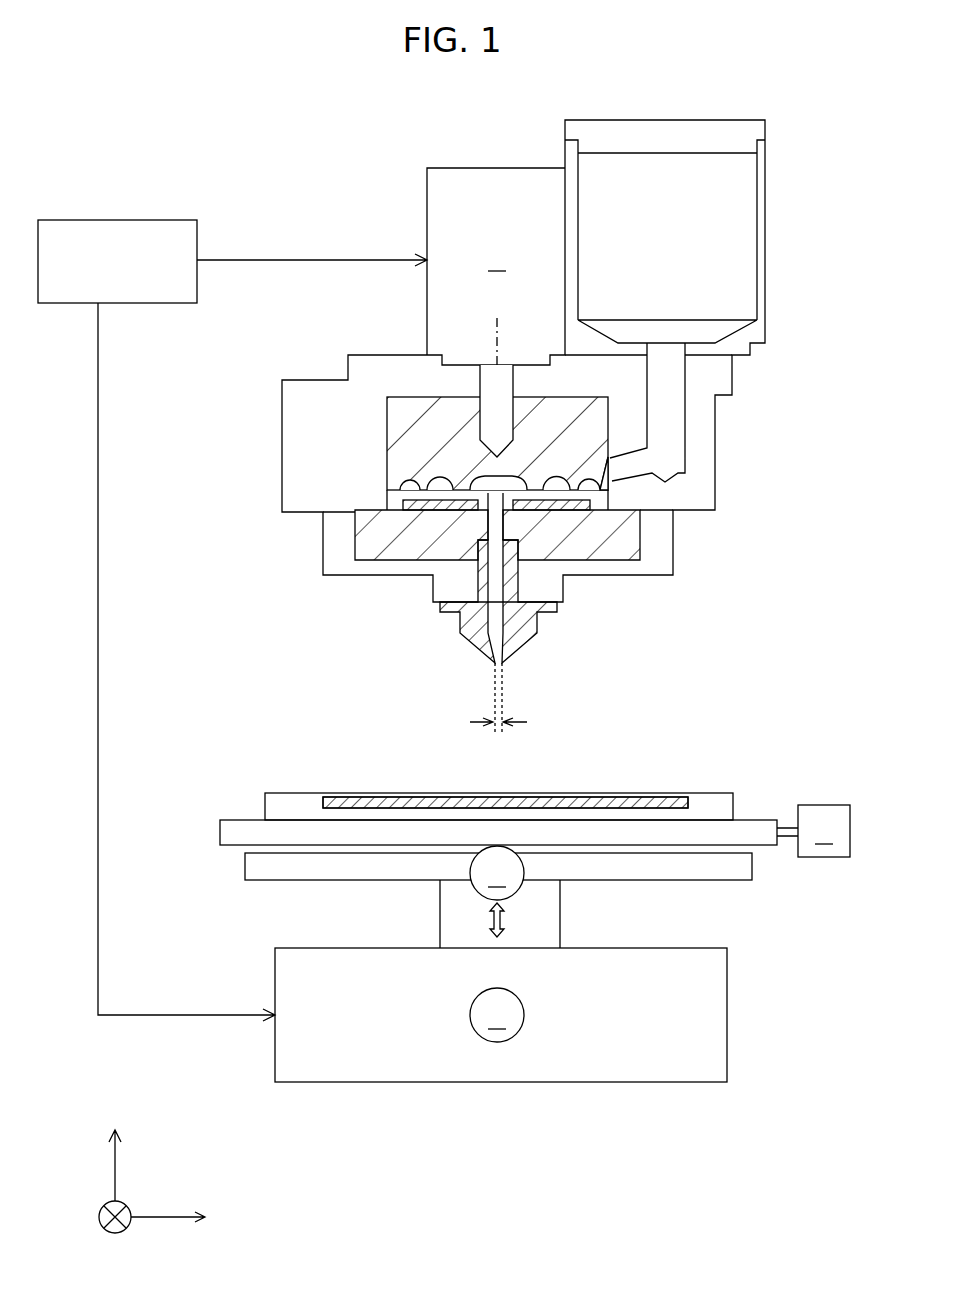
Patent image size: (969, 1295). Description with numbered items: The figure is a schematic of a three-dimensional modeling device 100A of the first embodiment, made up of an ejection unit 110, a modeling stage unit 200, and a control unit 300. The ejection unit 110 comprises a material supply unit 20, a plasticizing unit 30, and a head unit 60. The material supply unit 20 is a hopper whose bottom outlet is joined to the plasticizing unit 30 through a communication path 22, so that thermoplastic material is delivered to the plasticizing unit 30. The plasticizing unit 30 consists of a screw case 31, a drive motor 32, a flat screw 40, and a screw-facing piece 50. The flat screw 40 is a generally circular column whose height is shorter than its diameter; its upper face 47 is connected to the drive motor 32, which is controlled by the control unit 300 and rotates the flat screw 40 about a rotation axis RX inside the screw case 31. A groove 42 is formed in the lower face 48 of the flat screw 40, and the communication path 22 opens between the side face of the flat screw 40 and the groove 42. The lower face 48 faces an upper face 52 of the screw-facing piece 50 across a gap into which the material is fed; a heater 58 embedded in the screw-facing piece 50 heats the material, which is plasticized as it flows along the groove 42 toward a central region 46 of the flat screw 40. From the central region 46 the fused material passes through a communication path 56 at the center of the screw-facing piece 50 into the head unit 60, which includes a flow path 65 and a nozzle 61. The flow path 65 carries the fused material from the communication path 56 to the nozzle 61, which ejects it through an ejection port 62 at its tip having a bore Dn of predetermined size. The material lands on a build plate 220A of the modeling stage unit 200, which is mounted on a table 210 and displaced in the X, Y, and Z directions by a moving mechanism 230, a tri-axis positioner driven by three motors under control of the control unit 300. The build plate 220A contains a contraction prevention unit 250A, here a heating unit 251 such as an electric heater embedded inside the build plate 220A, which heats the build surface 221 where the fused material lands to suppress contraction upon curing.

The 3D modeling device 100A is at (146, 98).
The ejection unit 110 is at (312, 111).
The control unit 300 is at (105, 220).
The plasticizing unit 30 is at (500, 361).
The drive motor 32 is at (427, 196).
The screw case 31 is at (397, 357).
The rotation axis RX is at (493, 330).
The material supply unit 20 is at (703, 311).
The communication path 22 is at (663, 415).
The flat screw 40 is at (394, 419).
The groove 42 is at (488, 456).
The central region 46 is at (442, 472).
The upper face 47 is at (417, 397).
The lower face 48 is at (403, 484).
The screw-facing piece 50 is at (481, 537).
The upper face 52 is at (398, 512).
The communication path 56 is at (640, 557).
The heater 58 is at (640, 537).
The head unit 60 is at (556, 625).
The flow path 65 is at (557, 605).
The nozzle 61 is at (485, 645).
The ejection port 62 is at (505, 673).
The bore Dn is at (509, 710).
The modeling stage unit 200 is at (506, 889).
The build plate 220A is at (305, 793).
The contraction prevention unit 250A is at (387, 793).
The heating unit 251 is at (505, 802).
The build surface 221 is at (675, 792).
The table 210 is at (235, 830).
The moving mechanism 230 is at (786, 945).